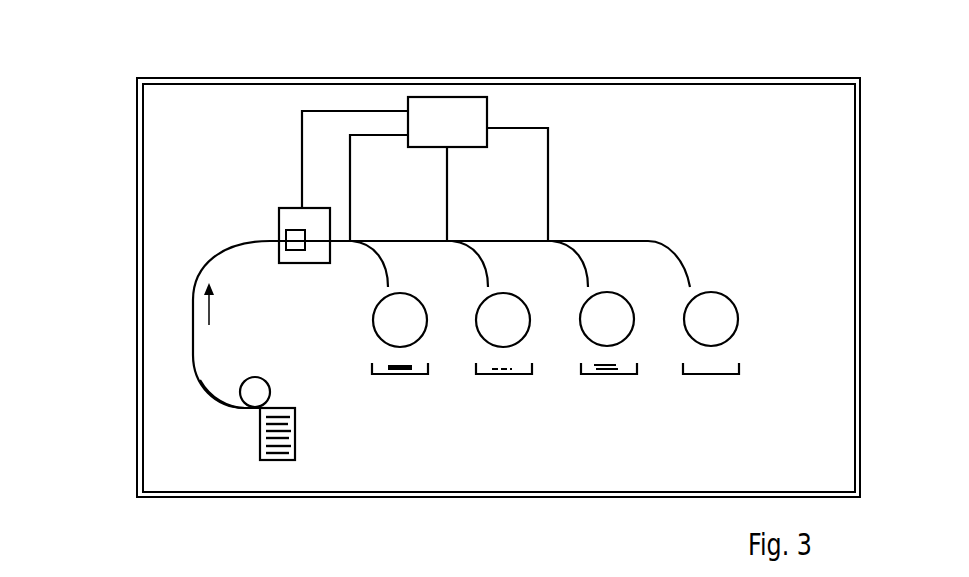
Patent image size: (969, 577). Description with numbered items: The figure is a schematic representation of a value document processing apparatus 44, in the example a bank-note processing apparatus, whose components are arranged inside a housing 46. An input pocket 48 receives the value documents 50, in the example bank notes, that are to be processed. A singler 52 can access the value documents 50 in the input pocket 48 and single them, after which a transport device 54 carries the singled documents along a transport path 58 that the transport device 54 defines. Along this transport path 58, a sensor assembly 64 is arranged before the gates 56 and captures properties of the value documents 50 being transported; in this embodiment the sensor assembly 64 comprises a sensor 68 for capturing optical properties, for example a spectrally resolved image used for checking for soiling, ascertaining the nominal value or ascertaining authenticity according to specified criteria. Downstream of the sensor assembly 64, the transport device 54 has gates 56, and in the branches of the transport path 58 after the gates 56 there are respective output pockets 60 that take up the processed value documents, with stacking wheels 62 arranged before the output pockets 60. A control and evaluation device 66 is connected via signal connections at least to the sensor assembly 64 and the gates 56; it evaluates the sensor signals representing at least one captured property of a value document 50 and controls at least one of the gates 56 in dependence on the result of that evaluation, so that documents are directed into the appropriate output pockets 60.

The value document processing apparatus 44 is at (193, 58).
The housing 46 is at (240, 79).
The input pocket 48 is at (297, 452).
The value documents 50 is at (395, 361).
The singler 52 is at (245, 378).
The transport device 54 is at (208, 395).
The gates 56 is at (352, 240).
The transport path 58 is at (216, 232).
The output pockets 60 is at (383, 377).
The stacking wheels 62 is at (417, 305).
The sensor assembly 64 is at (317, 208).
The control and evaluation device 66 is at (427, 103).
The sensor 68 is at (289, 207).